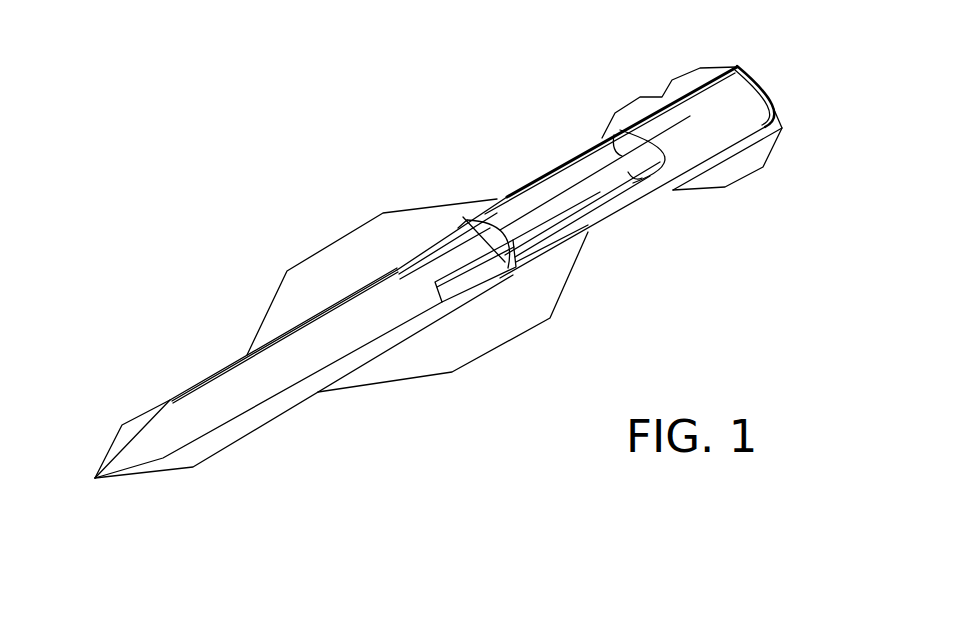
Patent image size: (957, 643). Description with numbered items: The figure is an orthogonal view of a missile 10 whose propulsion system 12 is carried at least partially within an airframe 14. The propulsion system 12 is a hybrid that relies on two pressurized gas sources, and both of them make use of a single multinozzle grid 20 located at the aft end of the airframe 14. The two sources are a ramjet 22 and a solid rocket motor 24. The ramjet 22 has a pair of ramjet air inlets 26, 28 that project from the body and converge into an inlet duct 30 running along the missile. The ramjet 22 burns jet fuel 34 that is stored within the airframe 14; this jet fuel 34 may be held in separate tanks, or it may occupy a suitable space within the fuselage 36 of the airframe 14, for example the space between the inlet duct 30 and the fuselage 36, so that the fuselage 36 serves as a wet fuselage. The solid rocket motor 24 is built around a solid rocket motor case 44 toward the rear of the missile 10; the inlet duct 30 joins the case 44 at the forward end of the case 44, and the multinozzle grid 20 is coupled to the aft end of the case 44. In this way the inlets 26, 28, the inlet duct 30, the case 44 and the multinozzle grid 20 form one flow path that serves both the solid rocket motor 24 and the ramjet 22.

The missile 10 is at (127, 332).
The propulsion system 12 is at (526, 135).
The airframe 14 is at (330, 377).
The multinozzle grid 20 is at (782, 92).
The ramjet 22 is at (463, 187).
The solid rocket motor 24 is at (629, 88).
The ramjet air inlet 26 is at (397, 269).
The ramjet air inlet 28 is at (440, 305).
The inlet duct 30 is at (592, 183).
The jet fuel 34 is at (588, 222).
The fuselage 36 is at (235, 382).
The solid rocket motor case 44 is at (702, 142).